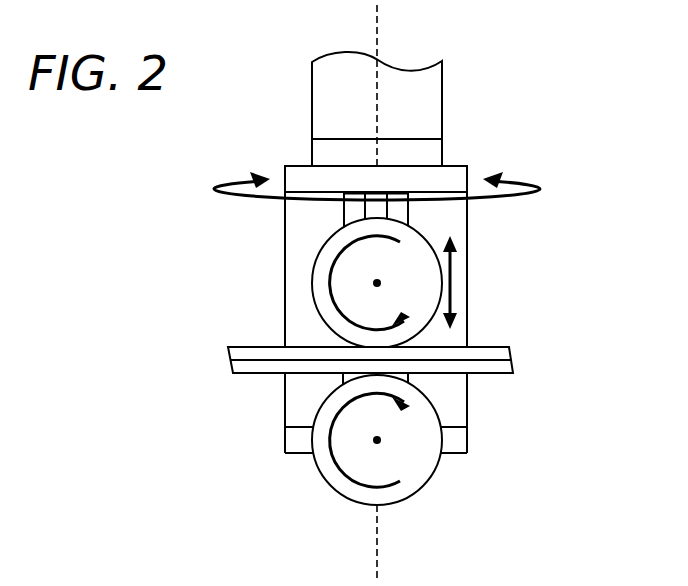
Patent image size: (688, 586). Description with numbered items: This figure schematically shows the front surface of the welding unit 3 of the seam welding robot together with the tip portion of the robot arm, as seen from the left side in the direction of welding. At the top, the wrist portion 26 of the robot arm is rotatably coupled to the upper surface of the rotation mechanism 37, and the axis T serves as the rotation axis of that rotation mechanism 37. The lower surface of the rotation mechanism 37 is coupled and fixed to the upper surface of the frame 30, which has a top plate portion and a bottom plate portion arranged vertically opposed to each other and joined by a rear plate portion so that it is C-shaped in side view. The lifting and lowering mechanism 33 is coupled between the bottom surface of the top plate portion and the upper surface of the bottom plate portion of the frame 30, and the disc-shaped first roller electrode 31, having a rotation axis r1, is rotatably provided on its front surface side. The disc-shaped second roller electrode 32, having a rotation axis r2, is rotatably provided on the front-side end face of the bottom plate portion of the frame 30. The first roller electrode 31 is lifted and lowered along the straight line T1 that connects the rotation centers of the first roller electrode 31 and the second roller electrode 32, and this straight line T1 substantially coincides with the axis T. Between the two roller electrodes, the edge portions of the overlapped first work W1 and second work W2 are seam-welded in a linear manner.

The wrist portion 26 is at (428, 100).
The rotation mechanism 37 is at (428, 152).
The welding unit 3 is at (540, 162).
The lifting and lowering mechanism 33 is at (355, 212).
The first roller electrode 31 is at (320, 276).
The rotation axis of the first roller electrode r1 is at (377, 285).
The second roller electrode 32 is at (330, 407).
The rotation axis of the second roller electrode r2 is at (377, 440).
The frame 30 is at (455, 437).
The first work W1 is at (498, 353).
The second work W2 is at (500, 367).
The axis T is at (378, 22).
The straight line T1 is at (380, 553).